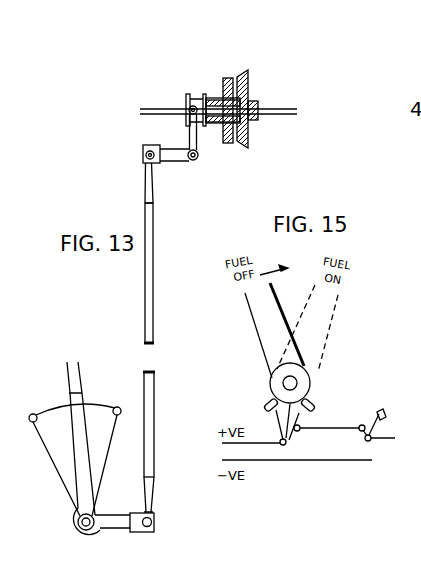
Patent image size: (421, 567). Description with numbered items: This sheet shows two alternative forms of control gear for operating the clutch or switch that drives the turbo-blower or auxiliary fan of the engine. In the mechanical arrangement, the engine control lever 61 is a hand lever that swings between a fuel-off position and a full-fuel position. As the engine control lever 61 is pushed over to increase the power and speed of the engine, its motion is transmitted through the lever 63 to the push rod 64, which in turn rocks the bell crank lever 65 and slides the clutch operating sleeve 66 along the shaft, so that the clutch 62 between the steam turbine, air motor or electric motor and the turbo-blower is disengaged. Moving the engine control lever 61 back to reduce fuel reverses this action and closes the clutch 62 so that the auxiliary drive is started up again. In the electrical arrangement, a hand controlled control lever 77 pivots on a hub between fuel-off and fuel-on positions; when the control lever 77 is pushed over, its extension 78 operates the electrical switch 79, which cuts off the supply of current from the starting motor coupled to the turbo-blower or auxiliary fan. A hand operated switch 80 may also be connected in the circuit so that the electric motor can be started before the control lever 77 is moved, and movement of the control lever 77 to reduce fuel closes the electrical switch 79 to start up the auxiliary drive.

In FIG. 13, the engine control lever 61 is at (77, 458).
In FIG. 13, the clutch 62 is at (250, 80).
In FIG. 13, the lever 63 is at (115, 529).
In FIG. 13, the push rod 64 is at (150, 296).
In FIG. 13, the bell crank lever 65 is at (185, 162).
In FIG. 13, the clutch operating sleeve 66 is at (191, 97).
In FIG. 15, the control lever 77 is at (268, 327).
In FIG. 15, the extension 78 is at (311, 402).
In FIG. 15, the electrical switch 79 is at (289, 437).
In FIG. 15, the hand operated switch 80 is at (379, 414).